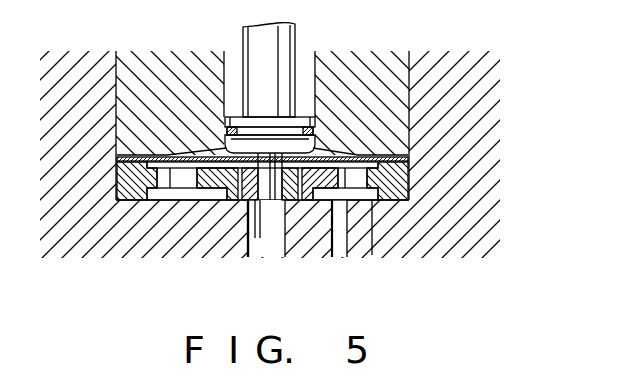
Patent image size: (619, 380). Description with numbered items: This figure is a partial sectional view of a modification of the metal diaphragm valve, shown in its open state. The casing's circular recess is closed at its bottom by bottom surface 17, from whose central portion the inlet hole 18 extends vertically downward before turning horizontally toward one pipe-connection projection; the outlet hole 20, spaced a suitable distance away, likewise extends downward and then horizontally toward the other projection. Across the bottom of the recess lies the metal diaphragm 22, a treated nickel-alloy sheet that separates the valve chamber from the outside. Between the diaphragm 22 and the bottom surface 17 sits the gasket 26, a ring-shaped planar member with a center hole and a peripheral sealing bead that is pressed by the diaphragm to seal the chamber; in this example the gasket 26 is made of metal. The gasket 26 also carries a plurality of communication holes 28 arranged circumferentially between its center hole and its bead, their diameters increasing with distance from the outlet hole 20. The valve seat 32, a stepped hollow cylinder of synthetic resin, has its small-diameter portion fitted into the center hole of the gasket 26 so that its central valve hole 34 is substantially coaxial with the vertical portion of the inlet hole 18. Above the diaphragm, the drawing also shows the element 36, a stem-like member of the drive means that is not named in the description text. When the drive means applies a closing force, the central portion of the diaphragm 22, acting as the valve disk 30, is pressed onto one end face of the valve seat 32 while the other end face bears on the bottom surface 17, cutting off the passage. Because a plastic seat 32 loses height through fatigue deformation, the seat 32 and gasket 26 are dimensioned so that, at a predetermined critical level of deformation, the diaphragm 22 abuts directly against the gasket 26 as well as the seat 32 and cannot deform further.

The bottom surface 17 is at (178, 199).
The inlet hole 18 is at (246, 252).
The outlet hole 20 is at (363, 238).
The metal diaphragm 22 is at (408, 146).
The gasket 26 is at (123, 202).
The communication holes 28 is at (390, 217).
The valve disk 30 is at (268, 202).
The valve seat 32 is at (208, 202).
The valve hole 34 is at (273, 202).
The actuator stem 36 is at (291, 48).